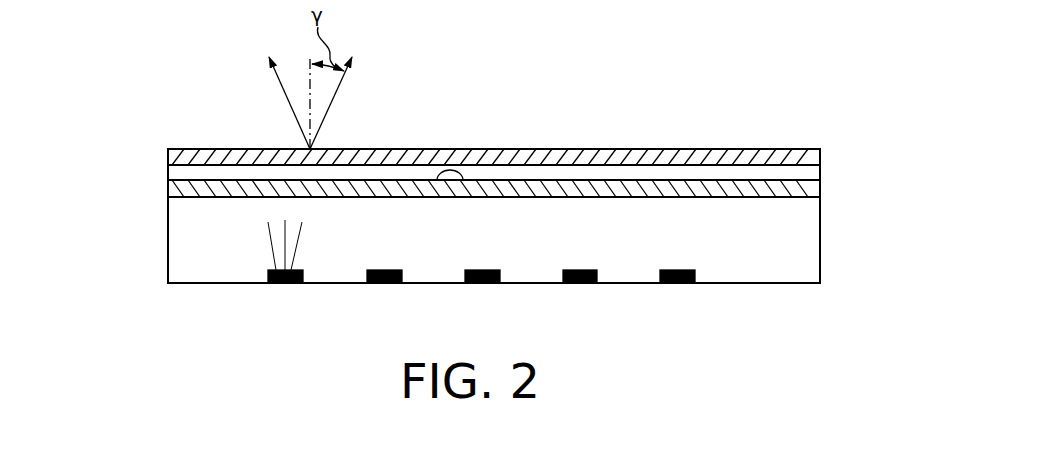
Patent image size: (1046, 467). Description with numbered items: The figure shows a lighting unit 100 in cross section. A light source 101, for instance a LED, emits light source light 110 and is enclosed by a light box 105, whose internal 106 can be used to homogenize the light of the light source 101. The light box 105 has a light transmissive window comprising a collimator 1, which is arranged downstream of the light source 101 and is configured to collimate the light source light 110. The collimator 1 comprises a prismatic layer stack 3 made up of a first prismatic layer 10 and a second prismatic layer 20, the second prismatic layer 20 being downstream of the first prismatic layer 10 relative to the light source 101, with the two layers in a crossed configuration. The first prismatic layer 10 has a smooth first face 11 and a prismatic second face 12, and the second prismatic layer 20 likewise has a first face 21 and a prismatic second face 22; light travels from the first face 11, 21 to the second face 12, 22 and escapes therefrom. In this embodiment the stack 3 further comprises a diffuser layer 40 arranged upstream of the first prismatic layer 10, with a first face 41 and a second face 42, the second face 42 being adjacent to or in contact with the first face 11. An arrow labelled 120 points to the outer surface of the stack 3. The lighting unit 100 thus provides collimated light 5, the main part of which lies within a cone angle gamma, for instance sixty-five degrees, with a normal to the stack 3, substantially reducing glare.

The collimator 1 is at (98, 122).
The prismatic layer stack 3 is at (803, 132).
The light 5 is at (337, 96).
The first prismatic layer 10 is at (163, 172).
The first face 11 is at (533, 197).
The second face 12 is at (437, 180).
The second prismatic layer 20 is at (163, 155).
The first face 21 is at (630, 165).
The second face 22 is at (572, 148).
The diffuser layer 40 is at (823, 189).
The first face 41 is at (640, 197).
The second face 42 is at (613, 180).
The lighting unit 100 is at (163, 196).
The light source 101 is at (288, 277).
The light box 105 is at (163, 226).
The internal of the light box 106 is at (768, 258).
The light source light 110 is at (273, 245).
The light exit surface 120 is at (720, 132).